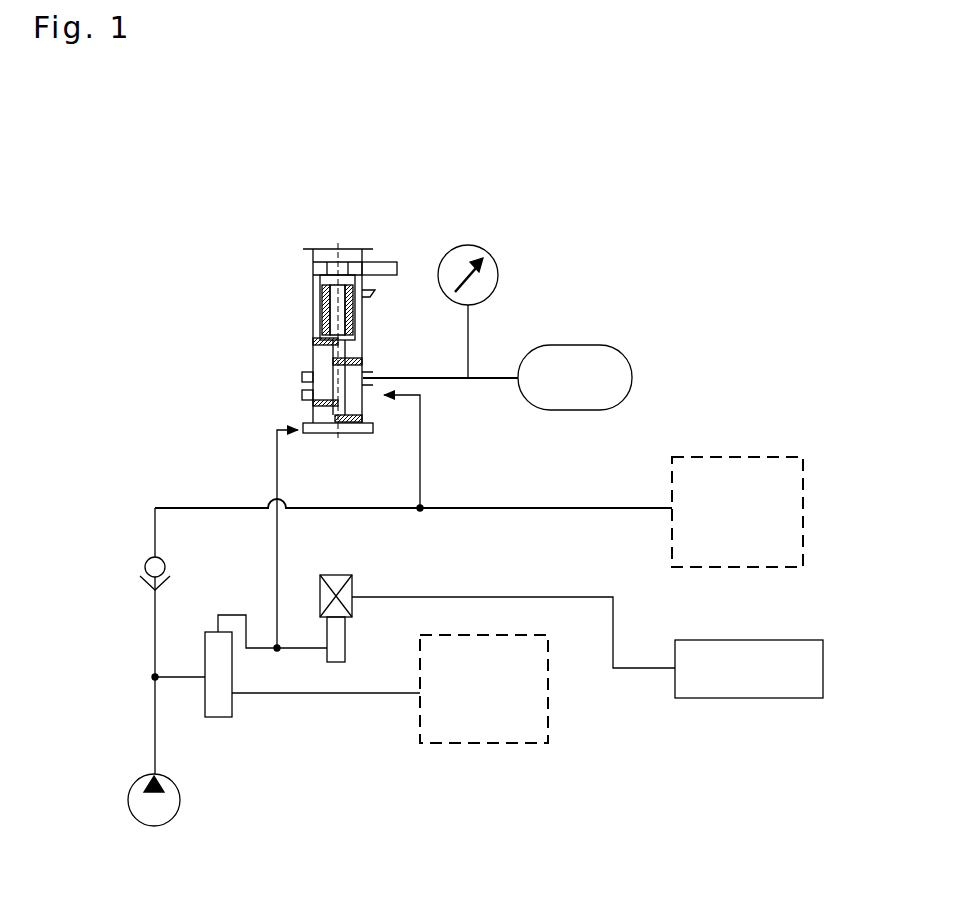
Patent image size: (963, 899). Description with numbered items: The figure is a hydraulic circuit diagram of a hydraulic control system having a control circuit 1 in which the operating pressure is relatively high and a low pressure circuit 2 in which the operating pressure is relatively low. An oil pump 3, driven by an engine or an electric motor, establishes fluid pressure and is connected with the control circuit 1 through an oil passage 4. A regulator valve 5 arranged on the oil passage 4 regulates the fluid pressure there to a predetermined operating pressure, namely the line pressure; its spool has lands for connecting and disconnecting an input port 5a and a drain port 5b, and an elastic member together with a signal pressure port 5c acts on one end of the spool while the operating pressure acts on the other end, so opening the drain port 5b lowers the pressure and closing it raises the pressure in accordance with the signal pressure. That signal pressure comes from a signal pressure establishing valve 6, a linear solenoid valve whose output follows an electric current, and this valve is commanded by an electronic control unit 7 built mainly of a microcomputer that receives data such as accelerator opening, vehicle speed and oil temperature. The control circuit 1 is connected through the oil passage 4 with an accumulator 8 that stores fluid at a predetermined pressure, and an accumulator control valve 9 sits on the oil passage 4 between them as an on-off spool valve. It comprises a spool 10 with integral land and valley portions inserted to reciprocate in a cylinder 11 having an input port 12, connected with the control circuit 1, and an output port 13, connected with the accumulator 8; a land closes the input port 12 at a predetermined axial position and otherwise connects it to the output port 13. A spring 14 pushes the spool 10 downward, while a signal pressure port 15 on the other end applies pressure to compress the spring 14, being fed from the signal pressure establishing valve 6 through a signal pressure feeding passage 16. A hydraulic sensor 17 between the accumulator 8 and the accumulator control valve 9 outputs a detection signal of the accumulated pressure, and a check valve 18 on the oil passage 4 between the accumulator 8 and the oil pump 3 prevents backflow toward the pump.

The control circuit 1 is at (752, 457).
The low pressure circuit 2 is at (490, 745).
The oil pump 3 is at (142, 824).
The oil passage 4 is at (205, 508).
The regulator valve 5 is at (220, 718).
The input port 5a is at (205, 677).
The drain port 5b is at (232, 695).
The signal pressure port 5c is at (218, 632).
The signal pressure establishing valve 6 is at (346, 645).
The electronic control unit 7 is at (779, 699).
The accumulator 8 is at (606, 346).
The accumulator control valve 9 is at (290, 230).
The spool 10 is at (332, 330).
The cylinder 11 is at (363, 320).
The input port 12 is at (365, 397).
The output port 13 is at (365, 377).
The spring 14 is at (313, 299).
The signal pressure port 15 is at (298, 428).
The signal pressure feeding passage 16 is at (279, 543).
The hydraulic sensor 17 is at (480, 248).
The check valve 18 is at (144, 566).